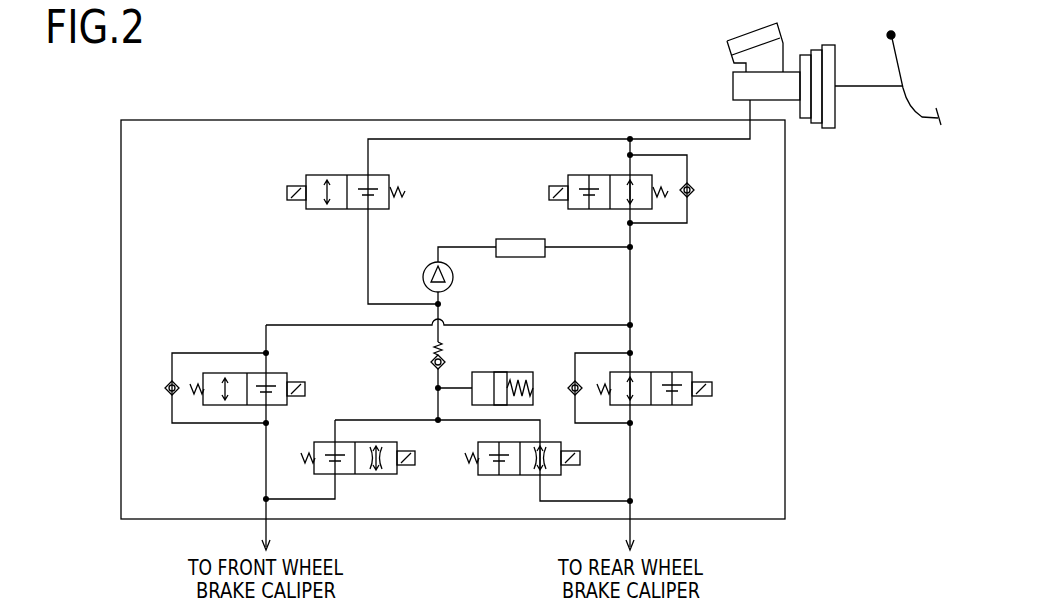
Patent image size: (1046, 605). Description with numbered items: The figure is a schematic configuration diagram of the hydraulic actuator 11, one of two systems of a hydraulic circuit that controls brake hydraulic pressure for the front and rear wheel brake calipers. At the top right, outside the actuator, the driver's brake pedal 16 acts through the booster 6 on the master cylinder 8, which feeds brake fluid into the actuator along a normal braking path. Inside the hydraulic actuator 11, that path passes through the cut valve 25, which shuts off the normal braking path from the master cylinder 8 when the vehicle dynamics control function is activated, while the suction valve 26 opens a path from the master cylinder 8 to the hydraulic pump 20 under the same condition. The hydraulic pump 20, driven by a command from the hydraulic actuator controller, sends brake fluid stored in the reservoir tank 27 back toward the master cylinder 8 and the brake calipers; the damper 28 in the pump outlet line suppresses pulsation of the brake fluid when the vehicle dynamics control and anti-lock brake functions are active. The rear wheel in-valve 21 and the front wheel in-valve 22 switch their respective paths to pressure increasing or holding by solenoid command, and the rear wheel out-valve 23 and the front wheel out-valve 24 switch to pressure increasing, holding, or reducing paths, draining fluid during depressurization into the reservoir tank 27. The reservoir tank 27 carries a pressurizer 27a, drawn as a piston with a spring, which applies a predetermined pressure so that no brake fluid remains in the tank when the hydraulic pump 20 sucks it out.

The booster 6 is at (830, 128).
The master cylinder 8 is at (722, 23).
The hydraulic actuator 11 is at (178, 119).
The brake pedal 16 is at (925, 118).
The hydraulic pump 20 is at (453, 277).
The rear wheel in-valve 21 is at (680, 372).
The front wheel in-valve 22 is at (288, 373).
The rear wheel out-valve 23 is at (483, 475).
The front wheel out-valve 24 is at (383, 474).
The cut valve 25 is at (568, 182).
The suction valve 26 is at (313, 209).
The reservoir tank 27 is at (487, 373).
The pressurizer 27a is at (525, 373).
The damper 28 is at (535, 257).